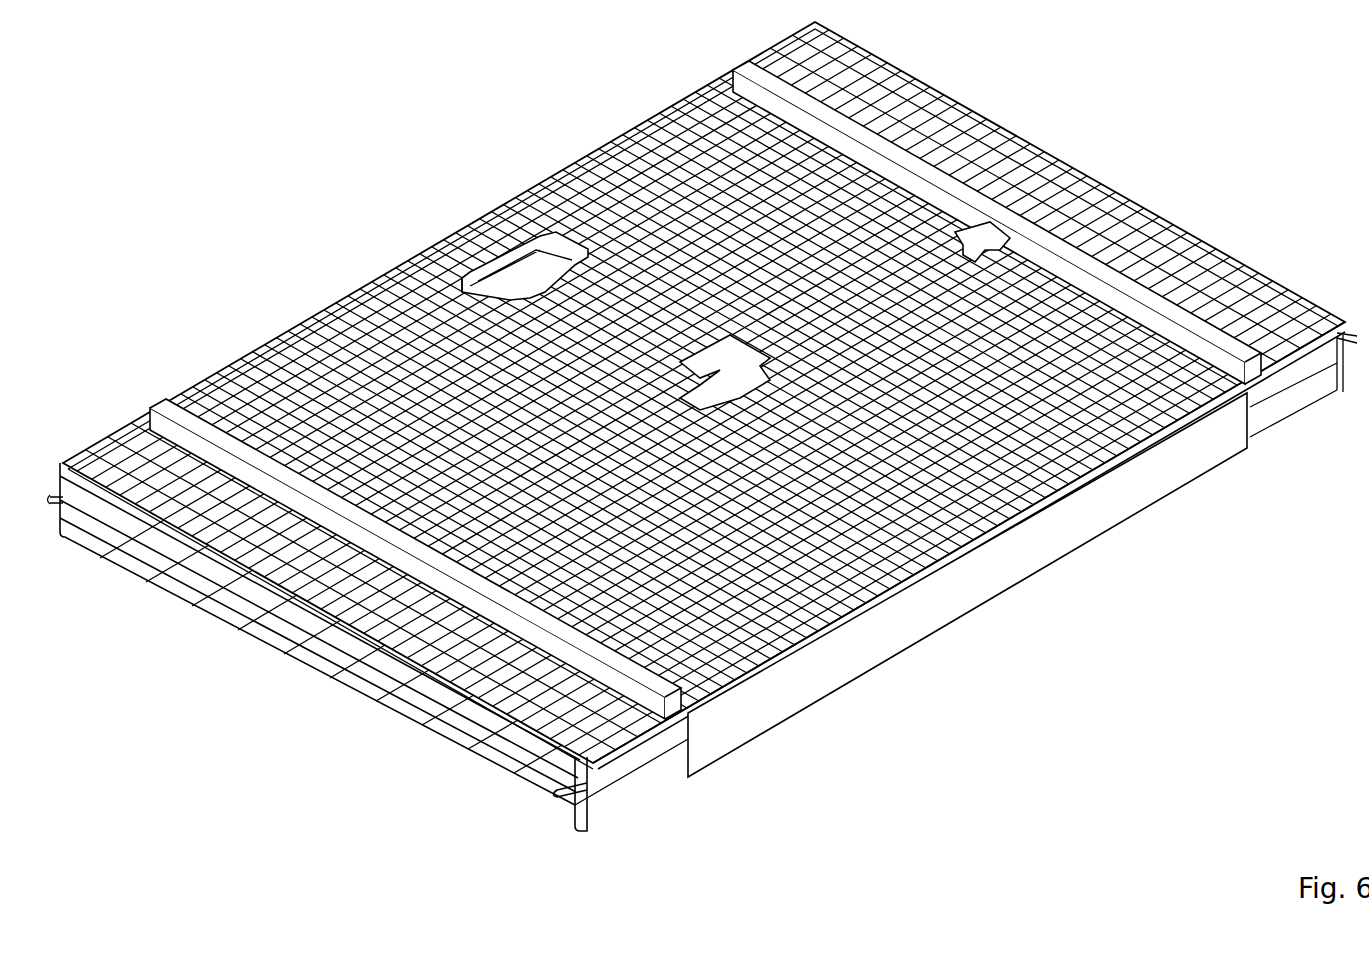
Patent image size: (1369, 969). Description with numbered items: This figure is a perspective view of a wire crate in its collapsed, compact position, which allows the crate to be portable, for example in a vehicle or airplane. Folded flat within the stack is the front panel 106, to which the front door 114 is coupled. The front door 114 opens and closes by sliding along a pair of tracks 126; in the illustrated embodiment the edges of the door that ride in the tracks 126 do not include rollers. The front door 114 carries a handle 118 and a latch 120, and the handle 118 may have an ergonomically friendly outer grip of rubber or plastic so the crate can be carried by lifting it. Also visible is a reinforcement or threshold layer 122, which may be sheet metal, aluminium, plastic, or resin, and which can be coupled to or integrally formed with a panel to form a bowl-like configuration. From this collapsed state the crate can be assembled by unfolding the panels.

The front panel 106 is at (1275, 322).
The front door 114 is at (1180, 332).
The handle 118 is at (553, 235).
The latch 120 is at (977, 237).
The reinforcement layer 122 is at (932, 612).
The pair of tracks 126 is at (178, 415).